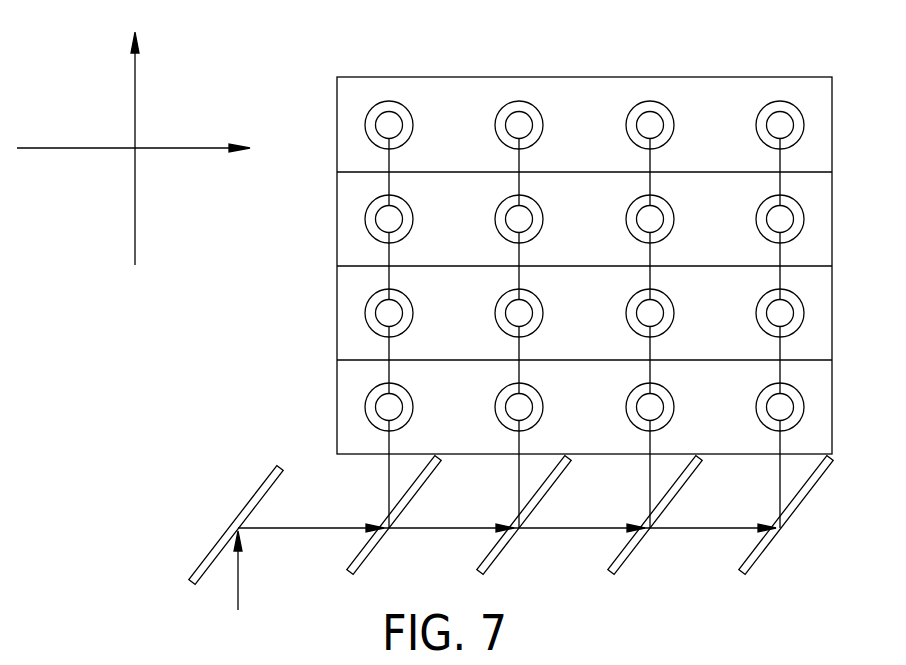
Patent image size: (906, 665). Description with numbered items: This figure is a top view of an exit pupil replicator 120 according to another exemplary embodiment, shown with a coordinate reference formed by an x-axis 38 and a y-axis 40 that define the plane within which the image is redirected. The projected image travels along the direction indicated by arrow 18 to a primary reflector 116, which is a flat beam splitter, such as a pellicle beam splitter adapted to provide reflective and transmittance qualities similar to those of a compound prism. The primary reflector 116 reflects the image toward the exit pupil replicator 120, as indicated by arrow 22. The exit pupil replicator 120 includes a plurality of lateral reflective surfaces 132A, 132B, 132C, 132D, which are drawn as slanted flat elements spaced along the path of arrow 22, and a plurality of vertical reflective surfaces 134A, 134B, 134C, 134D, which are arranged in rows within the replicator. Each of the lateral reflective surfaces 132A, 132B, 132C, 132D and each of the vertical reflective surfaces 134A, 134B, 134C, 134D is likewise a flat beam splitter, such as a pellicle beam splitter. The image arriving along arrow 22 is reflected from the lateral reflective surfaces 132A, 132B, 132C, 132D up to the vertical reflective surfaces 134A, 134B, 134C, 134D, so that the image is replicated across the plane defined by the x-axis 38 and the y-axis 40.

The y-axis 40 is at (135, 90).
The x-axis 38 is at (181, 150).
The exit pupil replicator 120 is at (326, 248).
The vertical reflective surface 134A is at (613, 419).
The vertical reflective surface 134B is at (613, 325).
The vertical reflective surface 134C is at (613, 231).
The vertical reflective surface 134D is at (613, 137).
The arrow 18 is at (238, 578).
The primary reflector 116 is at (224, 529).
The arrow 22 is at (279, 529).
The lateral reflective surface 132A is at (398, 518).
The lateral reflective surface 132B is at (528, 518).
The lateral reflective surface 132C is at (659, 518).
The lateral reflective surface 132D is at (790, 518).